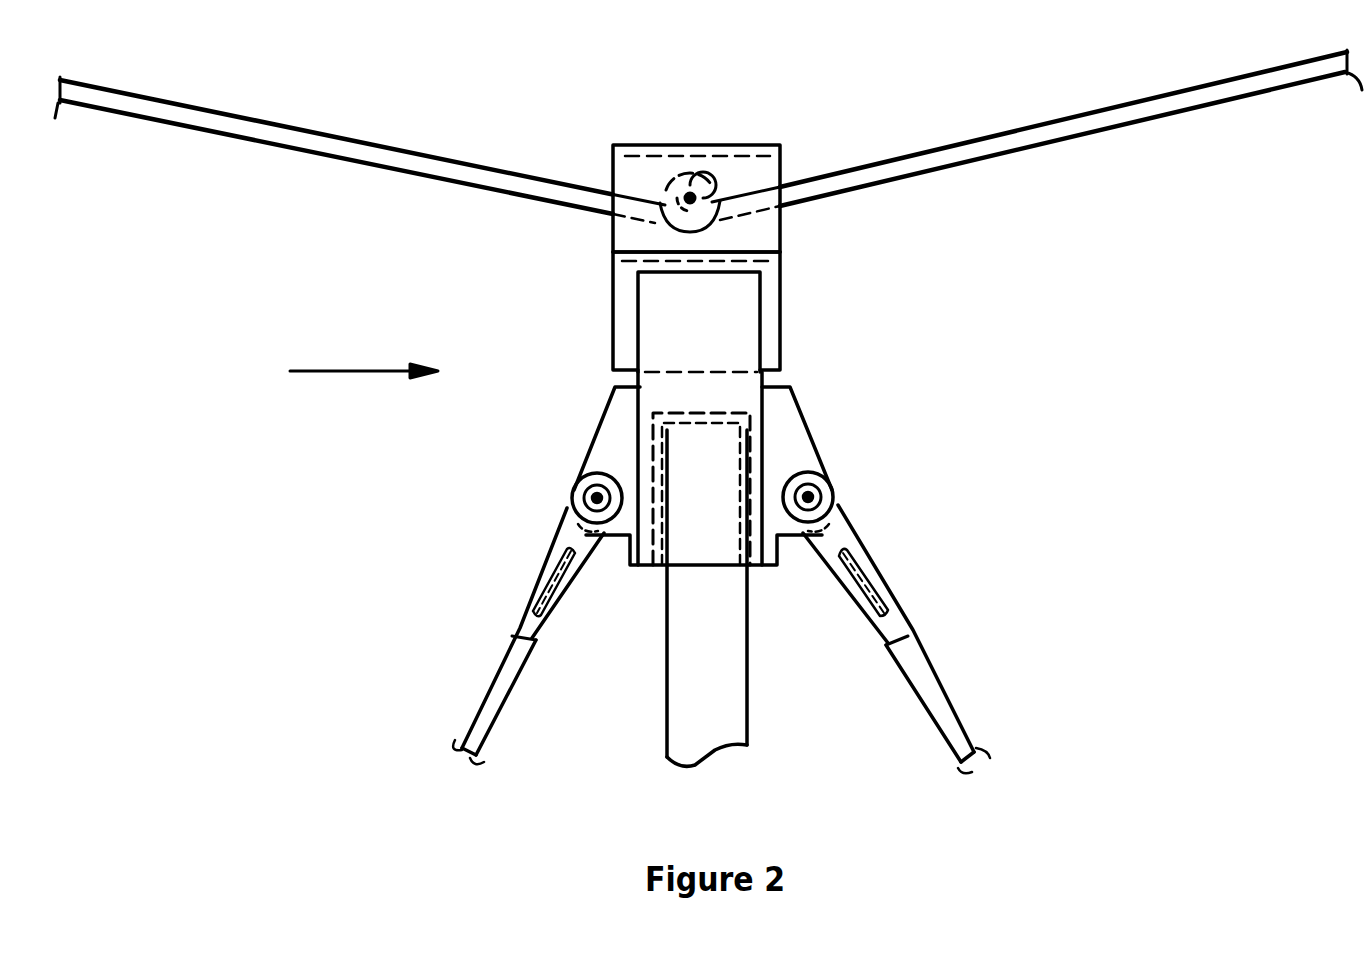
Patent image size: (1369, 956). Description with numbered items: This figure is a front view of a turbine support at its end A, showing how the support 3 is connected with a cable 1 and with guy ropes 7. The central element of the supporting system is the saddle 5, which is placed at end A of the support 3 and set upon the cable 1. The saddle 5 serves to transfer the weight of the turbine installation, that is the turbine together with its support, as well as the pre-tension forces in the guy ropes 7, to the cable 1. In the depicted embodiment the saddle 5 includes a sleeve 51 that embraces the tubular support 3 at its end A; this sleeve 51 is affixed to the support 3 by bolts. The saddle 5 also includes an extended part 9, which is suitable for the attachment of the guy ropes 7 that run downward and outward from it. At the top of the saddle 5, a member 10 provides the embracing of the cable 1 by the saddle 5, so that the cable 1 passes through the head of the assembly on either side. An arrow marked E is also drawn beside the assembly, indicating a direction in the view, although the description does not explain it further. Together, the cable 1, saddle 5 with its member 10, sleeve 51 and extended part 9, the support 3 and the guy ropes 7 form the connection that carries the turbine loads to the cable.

The cable 1 is at (1135, 103).
The member 10 is at (683, 143).
The saddle 5 is at (782, 180).
The end A is at (613, 252).
The sleeve 51 is at (737, 310).
The extended part 9 is at (792, 442).
The support 3 is at (708, 672).
The guy ropes 7 is at (497, 683).
The direction E is at (364, 347).